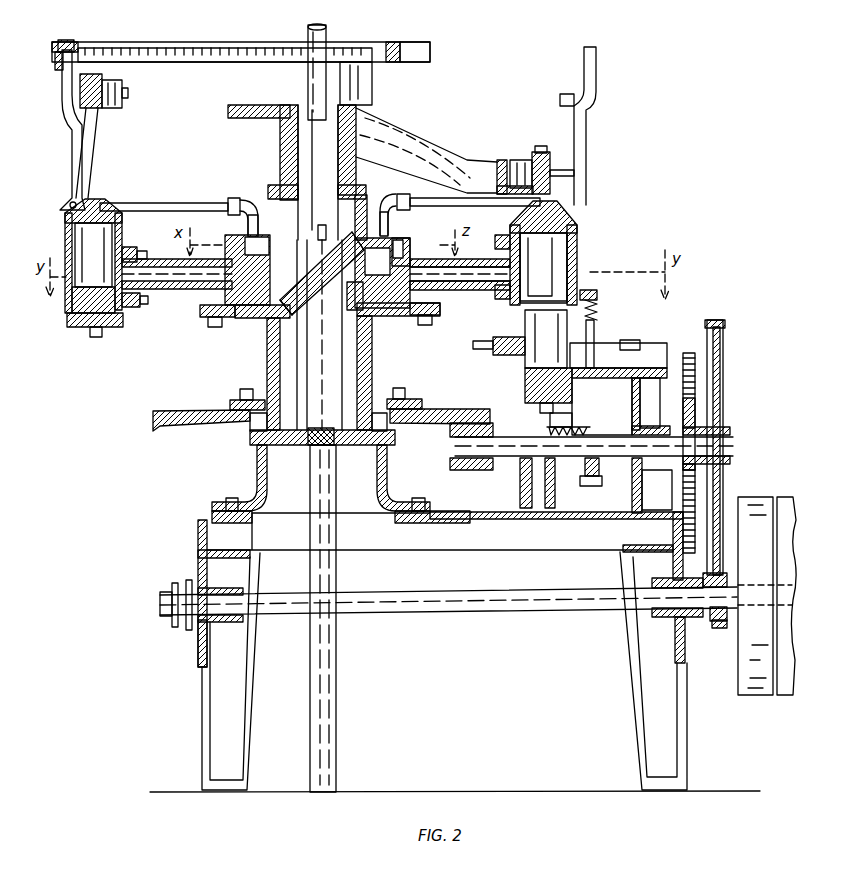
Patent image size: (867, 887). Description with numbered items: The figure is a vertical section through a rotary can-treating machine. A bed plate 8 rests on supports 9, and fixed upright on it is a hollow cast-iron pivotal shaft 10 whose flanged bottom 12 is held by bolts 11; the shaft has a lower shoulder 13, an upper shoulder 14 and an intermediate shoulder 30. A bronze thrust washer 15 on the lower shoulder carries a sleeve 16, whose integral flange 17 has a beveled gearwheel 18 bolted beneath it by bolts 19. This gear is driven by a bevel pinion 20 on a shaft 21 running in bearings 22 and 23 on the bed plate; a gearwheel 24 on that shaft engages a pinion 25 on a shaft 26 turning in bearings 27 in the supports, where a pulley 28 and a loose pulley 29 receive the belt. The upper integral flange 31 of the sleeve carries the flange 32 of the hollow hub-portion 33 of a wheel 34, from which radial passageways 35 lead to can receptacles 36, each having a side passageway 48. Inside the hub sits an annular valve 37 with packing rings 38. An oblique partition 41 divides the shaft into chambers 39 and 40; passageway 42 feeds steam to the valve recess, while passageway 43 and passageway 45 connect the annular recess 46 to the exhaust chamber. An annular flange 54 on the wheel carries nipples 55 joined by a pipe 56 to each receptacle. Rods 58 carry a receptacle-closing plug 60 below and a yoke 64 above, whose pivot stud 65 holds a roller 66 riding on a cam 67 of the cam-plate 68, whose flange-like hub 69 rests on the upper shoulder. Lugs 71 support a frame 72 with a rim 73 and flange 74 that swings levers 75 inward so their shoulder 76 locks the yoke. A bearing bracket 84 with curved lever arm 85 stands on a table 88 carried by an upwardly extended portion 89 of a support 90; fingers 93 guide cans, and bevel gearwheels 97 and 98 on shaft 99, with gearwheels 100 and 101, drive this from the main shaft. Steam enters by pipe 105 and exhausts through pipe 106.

The bed plate 8 is at (490, 521).
The supports 9 is at (442, 671).
The hollow pivotal shaft 10 is at (352, 212).
The bolts 11 is at (321, 490).
The flanged bottom 12 is at (212, 512).
The lower shoulder 13 is at (257, 450).
The upper shoulder 14 is at (270, 192).
The thrust washer 15 is at (300, 432).
The sleeve 16 is at (374, 358).
The integral flange 17 is at (236, 398).
The beveled gearwheel 18 is at (205, 410).
The bolts 19 is at (327, 384).
The bevel pinion 20 is at (478, 472).
The shaft 21 is at (734, 440).
The bearing 22 is at (537, 483).
The bearing 23 is at (657, 490).
The gearwheel 24 is at (722, 380).
The pinion 25 is at (720, 628).
The shaft 26 is at (545, 610).
The bearings 27 is at (228, 623).
The pulley 28 is at (765, 596).
The loose pulley 29 is at (780, 549).
The intermediate shoulder 30 is at (326, 312).
The integral flange 31 is at (258, 322).
The flange 32 is at (203, 308).
The hub-portion 33 is at (412, 240).
The wheel 34 is at (492, 292).
The passageways 35 is at (165, 292).
The can receptacles 36 is at (65, 246).
The annular valve 37 is at (348, 298).
The packing rings 38 is at (240, 236).
The chamber 39 is at (327, 172).
The chamber 40 is at (321, 335).
The partition 41 is at (330, 256).
The passageway 42 is at (305, 262).
The passageway 43 is at (352, 280).
The passageway 45 is at (377, 262).
The annular recess 46 is at (358, 233).
The passageway 48 is at (108, 262).
The annular flange 54 is at (264, 240).
The nipples 55 is at (258, 222).
The pipe 56 is at (180, 194).
The rods 58 is at (96, 160).
The receptacle-closing plug 60 is at (72, 326).
The yoke 64 is at (102, 80).
The pivot stud 65 is at (128, 93).
The roller 66 is at (115, 108).
The cam 67 is at (490, 160).
The cam-plate 68 is at (258, 106).
The flange-like hub 69 is at (280, 146).
The lugs 71 is at (372, 90).
The frame 72 is at (248, 46).
The rim 73 is at (72, 38).
The flange 74 is at (56, 60).
The levers 75 is at (70, 130).
The shoulder 76 is at (566, 94).
The bearing bracket 84 is at (598, 344).
The curved lever arm 85 is at (600, 296).
The table 88 is at (597, 380).
The upwardly extended portion 89 is at (651, 406).
The support 90 is at (632, 480).
The fingers 93 is at (473, 345).
The bevel gearwheel 97 is at (548, 424).
The bevel gearwheel 98 is at (590, 486).
The shaft 99 is at (580, 470).
The gearwheel 100 is at (688, 353).
The gearwheel 101 is at (683, 395).
The pipe 105 is at (308, 78).
The exhaust pipe 106 is at (336, 660).